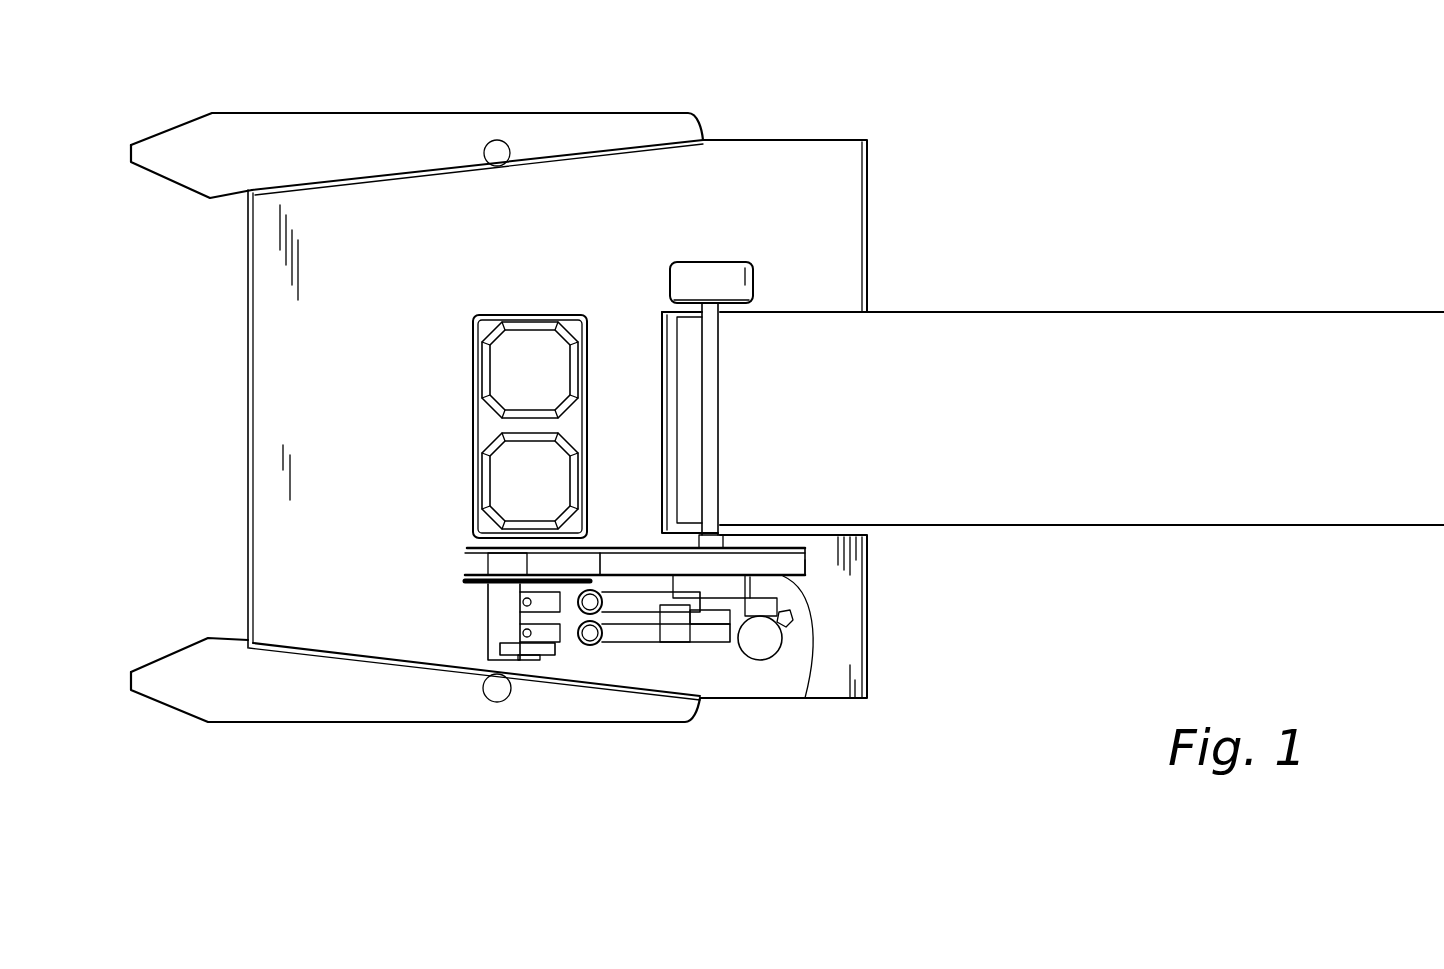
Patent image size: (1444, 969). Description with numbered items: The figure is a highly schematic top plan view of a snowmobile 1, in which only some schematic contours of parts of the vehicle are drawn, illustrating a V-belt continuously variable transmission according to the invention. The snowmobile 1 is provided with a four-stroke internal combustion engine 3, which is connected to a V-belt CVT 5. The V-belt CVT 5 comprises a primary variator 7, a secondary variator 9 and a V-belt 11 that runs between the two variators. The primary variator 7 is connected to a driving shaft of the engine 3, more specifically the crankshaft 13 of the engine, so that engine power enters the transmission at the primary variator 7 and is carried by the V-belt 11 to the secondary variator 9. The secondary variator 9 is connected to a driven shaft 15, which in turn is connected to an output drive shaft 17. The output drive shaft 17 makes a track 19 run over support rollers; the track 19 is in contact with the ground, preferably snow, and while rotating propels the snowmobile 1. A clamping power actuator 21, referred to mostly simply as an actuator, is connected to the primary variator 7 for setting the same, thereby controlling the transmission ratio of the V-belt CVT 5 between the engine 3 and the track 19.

The snowmobile 1 is at (735, 128).
The four-stroke internal combustion engine 3 is at (505, 388).
The V-belt CVT 5 is at (607, 548).
The primary variator 7 is at (485, 584).
The secondary variator 9 is at (805, 698).
The V-belt 11 is at (605, 645).
The crankshaft 13 is at (528, 548).
The driven shaft 15 is at (797, 540).
The output drive shaft 17 is at (715, 495).
The track 19 is at (1067, 463).
The clamping power actuator 21 is at (645, 625).